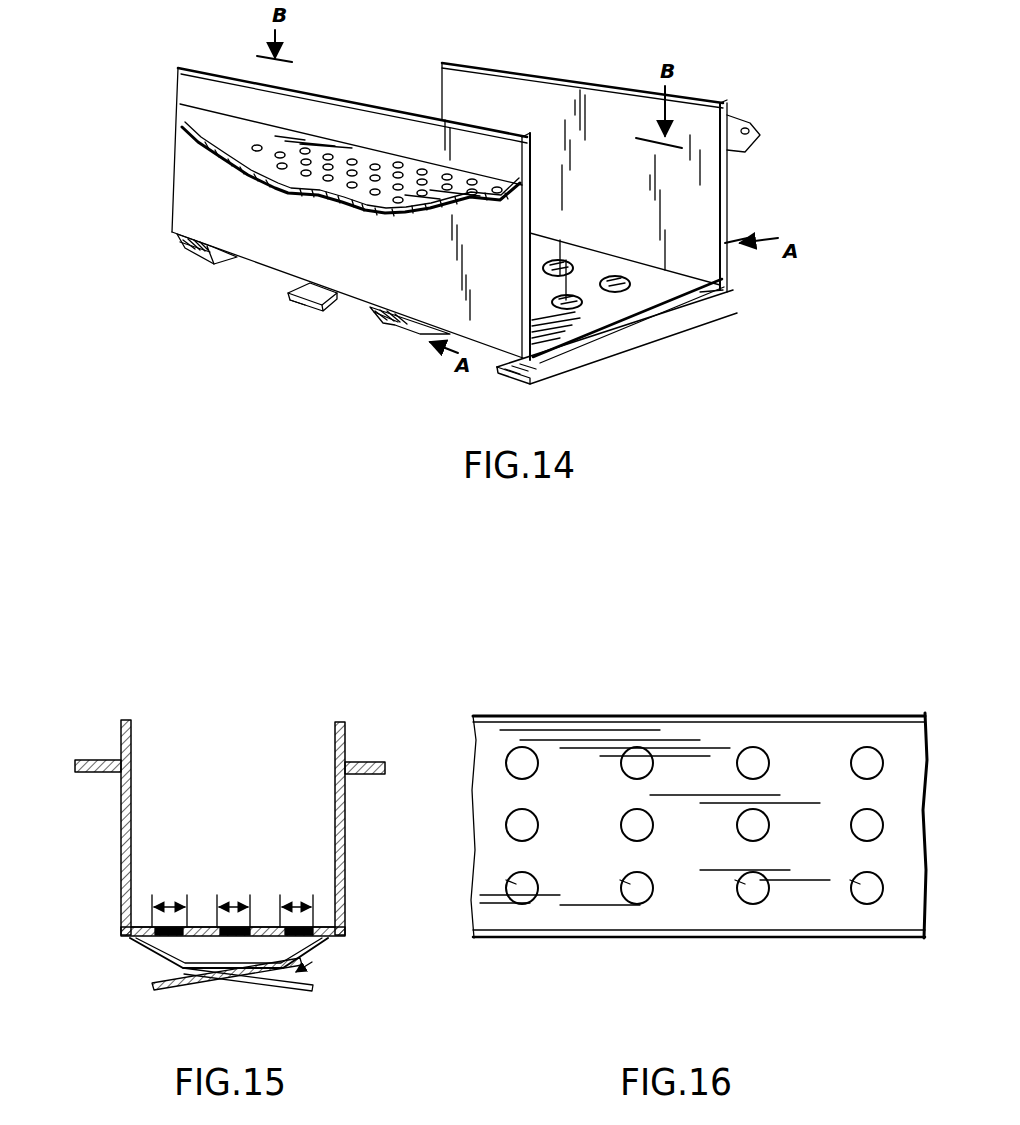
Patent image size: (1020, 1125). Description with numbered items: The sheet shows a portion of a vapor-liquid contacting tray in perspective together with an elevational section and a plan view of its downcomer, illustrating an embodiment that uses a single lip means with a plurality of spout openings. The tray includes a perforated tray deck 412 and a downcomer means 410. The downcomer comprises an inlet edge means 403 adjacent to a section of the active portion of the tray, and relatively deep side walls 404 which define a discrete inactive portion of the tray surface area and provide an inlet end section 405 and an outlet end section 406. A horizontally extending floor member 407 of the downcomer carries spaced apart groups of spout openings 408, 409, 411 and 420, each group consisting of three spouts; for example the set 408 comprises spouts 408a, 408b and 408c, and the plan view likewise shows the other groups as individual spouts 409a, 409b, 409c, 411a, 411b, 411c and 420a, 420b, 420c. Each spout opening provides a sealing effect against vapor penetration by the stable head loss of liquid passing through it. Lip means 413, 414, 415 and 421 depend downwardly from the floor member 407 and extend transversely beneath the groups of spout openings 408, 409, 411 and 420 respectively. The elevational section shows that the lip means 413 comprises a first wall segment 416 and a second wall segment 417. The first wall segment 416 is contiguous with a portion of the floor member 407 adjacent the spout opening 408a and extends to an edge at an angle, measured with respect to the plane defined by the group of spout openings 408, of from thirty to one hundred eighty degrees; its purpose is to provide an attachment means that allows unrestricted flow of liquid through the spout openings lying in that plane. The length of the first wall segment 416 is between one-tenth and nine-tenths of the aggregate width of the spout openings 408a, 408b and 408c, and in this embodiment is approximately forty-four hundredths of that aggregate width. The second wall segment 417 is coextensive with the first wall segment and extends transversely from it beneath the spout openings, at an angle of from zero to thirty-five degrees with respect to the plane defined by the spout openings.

In FIG. 14, the inlet edge means 403 is at (314, 118).
In FIG. 14, the side walls 404 is at (515, 223).
In FIG. 14, the inlet end section 405 is at (500, 92).
In FIG. 15, the inlet end section 405 is at (246, 750).
In FIG. 14, the outlet end section 406 is at (712, 270).
In FIG. 15, the outlet end section 406 is at (208, 899).
In FIG. 14, the floor member 407 is at (656, 296).
In FIG. 15, the floor member 407 is at (130, 940).
In FIG. 16, the floor member 407 is at (725, 730).
In FIG. 14, the group of spout openings 408 is at (585, 304).
In FIG. 15, the group of spout openings 408 is at (257, 963).
In FIG. 16, the group of spout openings 408 is at (843, 880).
In FIG. 15, the spout 408a is at (305, 925).
In FIG. 16, the spout 408a is at (871, 757).
In FIG. 15, the spout 408b is at (240, 925).
In FIG. 16, the spout 408b is at (874, 826).
In FIG. 16, the spout 408c is at (870, 894).
In FIG. 14, the group of spout openings 409 is at (400, 337).
In FIG. 16, the group of spout openings 409 is at (722, 883).
In FIG. 16, the hole 409a is at (756, 757).
In FIG. 16, the hole 409b is at (758, 826).
In FIG. 15, the hole 409c is at (160, 925).
In FIG. 16, the hole 409c is at (755, 894).
In FIG. 14, the downcomer means 410 is at (748, 328).
In FIG. 15, the downcomer means 410 is at (120, 868).
In FIG. 14, the group of spout openings 411 is at (288, 287).
In FIG. 16, the group of spout openings 411 is at (618, 866).
In FIG. 16, the hole 411a is at (640, 757).
In FIG. 16, the hole 411b is at (640, 826).
In FIG. 16, the hole 411c is at (637, 894).
In FIG. 14, the perforated tray deck 412 is at (213, 133).
In FIG. 15, the perforated tray deck 412 is at (96, 762).
In FIG. 14, the lip means 413 is at (580, 366).
In FIG. 15, the lip means 413 is at (255, 992).
In FIG. 14, the lip means 414 is at (388, 338).
In FIG. 14, the lip means 415 is at (314, 322).
In FIG. 15, the first wall segment 416 is at (343, 938).
In FIG. 15, the second wall segment 417 is at (186, 986).
In FIG. 14, the group of spout openings 420 is at (225, 265).
In FIG. 16, the group of spout openings 420 is at (508, 855).
In FIG. 16, the hole 420a is at (525, 757).
In FIG. 16, the hole 420b is at (528, 822).
In FIG. 16, the hole 420c is at (522, 894).
In FIG. 14, the lip means 421 is at (193, 262).